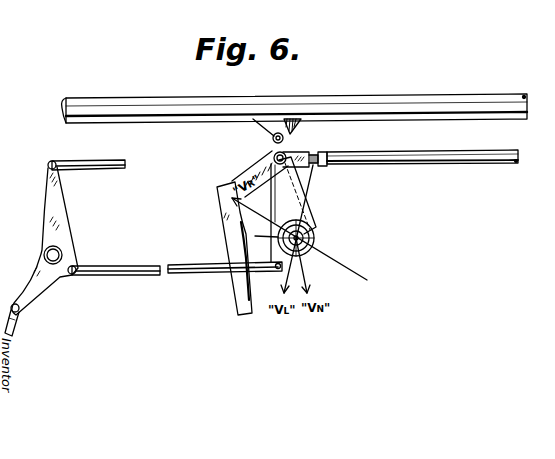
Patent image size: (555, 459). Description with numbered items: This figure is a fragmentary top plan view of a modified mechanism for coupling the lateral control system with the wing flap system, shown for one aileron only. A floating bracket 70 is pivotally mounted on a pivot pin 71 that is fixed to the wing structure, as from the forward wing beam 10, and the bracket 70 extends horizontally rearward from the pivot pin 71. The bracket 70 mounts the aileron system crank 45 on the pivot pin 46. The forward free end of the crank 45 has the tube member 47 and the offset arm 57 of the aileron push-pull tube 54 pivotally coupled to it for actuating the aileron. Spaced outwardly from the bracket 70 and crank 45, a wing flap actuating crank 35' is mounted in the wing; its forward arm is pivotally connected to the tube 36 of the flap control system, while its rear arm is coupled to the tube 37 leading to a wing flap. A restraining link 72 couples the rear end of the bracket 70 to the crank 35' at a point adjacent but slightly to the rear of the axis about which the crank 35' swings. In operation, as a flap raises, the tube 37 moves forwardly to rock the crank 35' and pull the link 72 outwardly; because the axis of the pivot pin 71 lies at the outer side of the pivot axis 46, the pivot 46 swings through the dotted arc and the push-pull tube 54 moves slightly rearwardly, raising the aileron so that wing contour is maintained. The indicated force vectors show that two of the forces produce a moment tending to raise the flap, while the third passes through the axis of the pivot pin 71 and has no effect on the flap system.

The forward wing beam 10 is at (319, 104).
The floating bracket 70 is at (272, 142).
The pivot pin 71 is at (291, 135).
The offset arm 57 is at (255, 176).
The aileron push-pull tube 54 is at (238, 295).
The tube member 47 is at (434, 162).
The aileron system crank 45 is at (307, 207).
The pivot pin 46 is at (310, 238).
The tube 36 is at (98, 163).
The wing flap actuating crank 35' is at (58, 241).
The tube 37 is at (19, 323).
The restraining link 72 is at (121, 271).